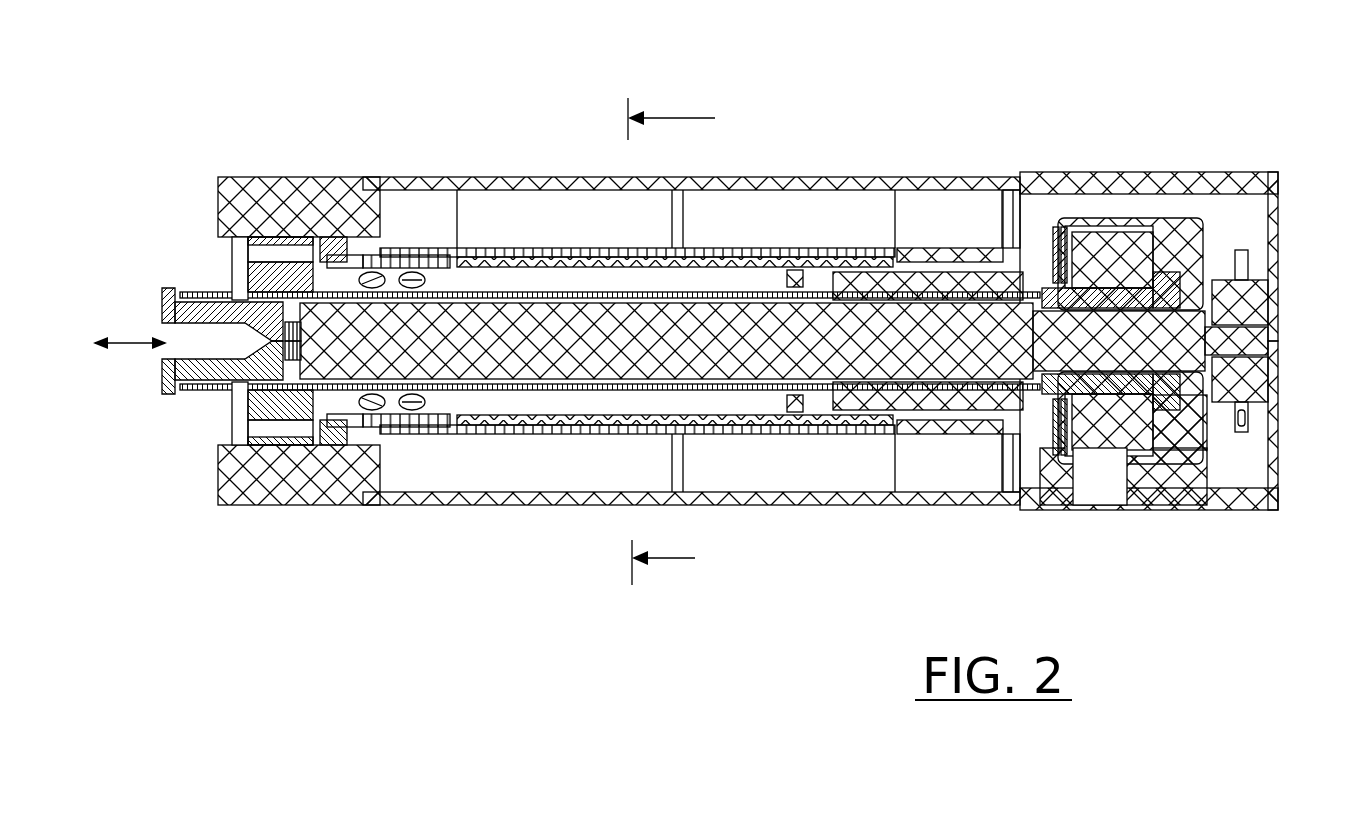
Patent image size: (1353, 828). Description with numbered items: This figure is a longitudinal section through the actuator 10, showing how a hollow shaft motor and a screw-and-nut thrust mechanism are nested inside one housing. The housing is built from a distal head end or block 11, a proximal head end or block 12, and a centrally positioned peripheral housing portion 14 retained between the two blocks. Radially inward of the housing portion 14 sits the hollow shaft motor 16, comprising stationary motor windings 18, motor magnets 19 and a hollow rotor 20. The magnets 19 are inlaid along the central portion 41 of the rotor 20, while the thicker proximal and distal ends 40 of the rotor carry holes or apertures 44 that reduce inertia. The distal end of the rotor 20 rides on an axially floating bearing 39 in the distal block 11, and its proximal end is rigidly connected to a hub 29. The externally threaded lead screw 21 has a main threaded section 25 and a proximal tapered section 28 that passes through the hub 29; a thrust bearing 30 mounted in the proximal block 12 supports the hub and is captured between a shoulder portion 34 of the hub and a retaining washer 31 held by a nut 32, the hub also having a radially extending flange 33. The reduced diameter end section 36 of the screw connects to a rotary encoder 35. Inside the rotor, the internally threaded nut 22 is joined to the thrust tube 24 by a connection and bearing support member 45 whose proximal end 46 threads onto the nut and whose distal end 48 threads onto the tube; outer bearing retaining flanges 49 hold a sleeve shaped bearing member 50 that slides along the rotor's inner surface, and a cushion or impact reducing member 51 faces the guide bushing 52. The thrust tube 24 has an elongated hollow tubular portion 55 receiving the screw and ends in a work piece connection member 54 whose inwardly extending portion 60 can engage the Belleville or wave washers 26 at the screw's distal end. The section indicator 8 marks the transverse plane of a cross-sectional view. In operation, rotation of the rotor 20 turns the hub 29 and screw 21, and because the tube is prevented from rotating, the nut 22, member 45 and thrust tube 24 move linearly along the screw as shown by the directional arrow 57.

The section line 8- 8 is at (681, 341).
The actuator 10 is at (573, 168).
The distal head end or block 11 is at (290, 178).
The proximal head end or block 12 is at (1195, 470).
The peripheral housing portion 14 is at (598, 195).
The hollow shaft motor 16 is at (822, 200).
The motor windings 18 is at (833, 440).
The motor magnets 19 is at (445, 445).
The rotor 20 is at (445, 427).
The lead screw 21 is at (540, 362).
The nut 22 is at (985, 455).
The thrust tube 24 is at (468, 275).
The main externally threaded section 25 is at (650, 335).
The Belleville or wave washers 26 is at (305, 440).
The tapered section 28 is at (1128, 455).
The hub 29 is at (1112, 240).
The thrust bearing 30 is at (1128, 235).
The retaining washer 31 is at (1165, 255).
The nut 32 is at (1238, 255).
The radially extending flange 33 is at (1062, 455).
The shoulder portion 34 is at (1022, 245).
The rotary encoder 35 is at (1258, 300).
The reduced diameter end section 36 is at (1242, 340).
The bearing 39 is at (302, 245).
The proximal and distal ends of the rotor 40 is at (432, 255).
The central portion of the rotor 41 is at (700, 245).
The holes or apertures 44 is at (386, 262).
The connection and bearing support member 45 is at (872, 437).
The proximal end of connection member 46 is at (937, 437).
The distal end of connection member 48 is at (775, 437).
The outer bearing retaining flanges 49 is at (790, 272).
The sleeve shaped bearing member 50 is at (848, 258).
The cushion or impact reducing member 51 is at (745, 437).
The guide bushing 52 is at (234, 255).
The work piece connection member 54 is at (165, 382).
The hollow tubular portion 55 is at (590, 391).
The directional arrow 57 is at (133, 332).
The inwardly extending portion 60 is at (192, 395).